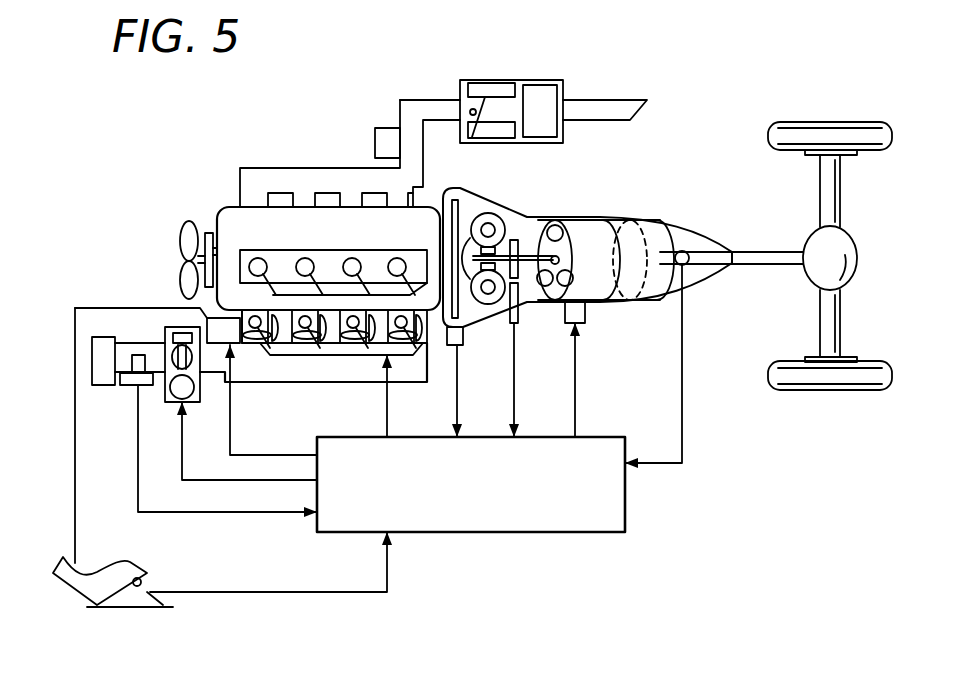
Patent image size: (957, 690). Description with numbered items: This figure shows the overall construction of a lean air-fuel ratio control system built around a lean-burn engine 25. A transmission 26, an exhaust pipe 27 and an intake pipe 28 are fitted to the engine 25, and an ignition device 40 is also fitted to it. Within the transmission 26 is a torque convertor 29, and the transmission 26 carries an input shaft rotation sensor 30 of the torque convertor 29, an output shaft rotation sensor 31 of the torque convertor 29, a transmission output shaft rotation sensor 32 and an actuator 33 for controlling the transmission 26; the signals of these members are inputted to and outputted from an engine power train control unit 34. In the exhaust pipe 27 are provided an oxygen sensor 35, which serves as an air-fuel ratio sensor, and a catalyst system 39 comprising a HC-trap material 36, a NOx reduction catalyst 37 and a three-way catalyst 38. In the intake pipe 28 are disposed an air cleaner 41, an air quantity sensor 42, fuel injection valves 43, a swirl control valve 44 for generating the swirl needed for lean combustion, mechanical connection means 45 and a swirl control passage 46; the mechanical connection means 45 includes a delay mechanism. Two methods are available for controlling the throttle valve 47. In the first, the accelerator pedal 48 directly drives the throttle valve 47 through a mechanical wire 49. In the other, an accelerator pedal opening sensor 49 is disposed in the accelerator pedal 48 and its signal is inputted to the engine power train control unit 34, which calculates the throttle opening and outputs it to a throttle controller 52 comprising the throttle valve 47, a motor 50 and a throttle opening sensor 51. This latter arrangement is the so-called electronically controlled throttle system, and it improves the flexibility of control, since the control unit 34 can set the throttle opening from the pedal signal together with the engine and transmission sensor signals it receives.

The lean-burn engine 25 is at (237, 217).
The transmission 26 is at (597, 217).
The exhaust pipe 27 is at (400, 104).
The intake pipe 28 is at (255, 384).
The torque convertor 29 is at (488, 225).
The input shaft rotation sensor 30 is at (463, 343).
The output shaft rotation sensor 31 is at (518, 318).
The transmission output shaft rotation sensor 32 is at (685, 251).
The actuator 33 is at (585, 310).
The engine power train control unit 34 is at (557, 532).
The oxygen sensor 35 is at (375, 142).
The HC-trap material 36 is at (485, 83).
The NOx reduction catalyst 37 is at (507, 138).
The three-way catalyst 38 is at (563, 83).
The catalyst system 39 is at (460, 87).
The ignition device 40 is at (258, 258).
The air cleaner 41 is at (92, 340).
The air quantity sensor 42 is at (132, 355).
The fuel injection valves 43 is at (353, 327).
The swirl control valve 44 is at (302, 338).
The mechanical connection means 45 is at (220, 344).
The swirl control passage 46 is at (318, 325).
The throttle valve 47 is at (160, 352).
The accelerator pedal 48 is at (125, 590).
The accelerator pedal opening sensor 49 is at (75, 463).
The motor 50 is at (165, 398).
The throttle opening sensor 51 is at (167, 330).
The throttle controller 52 is at (180, 333).